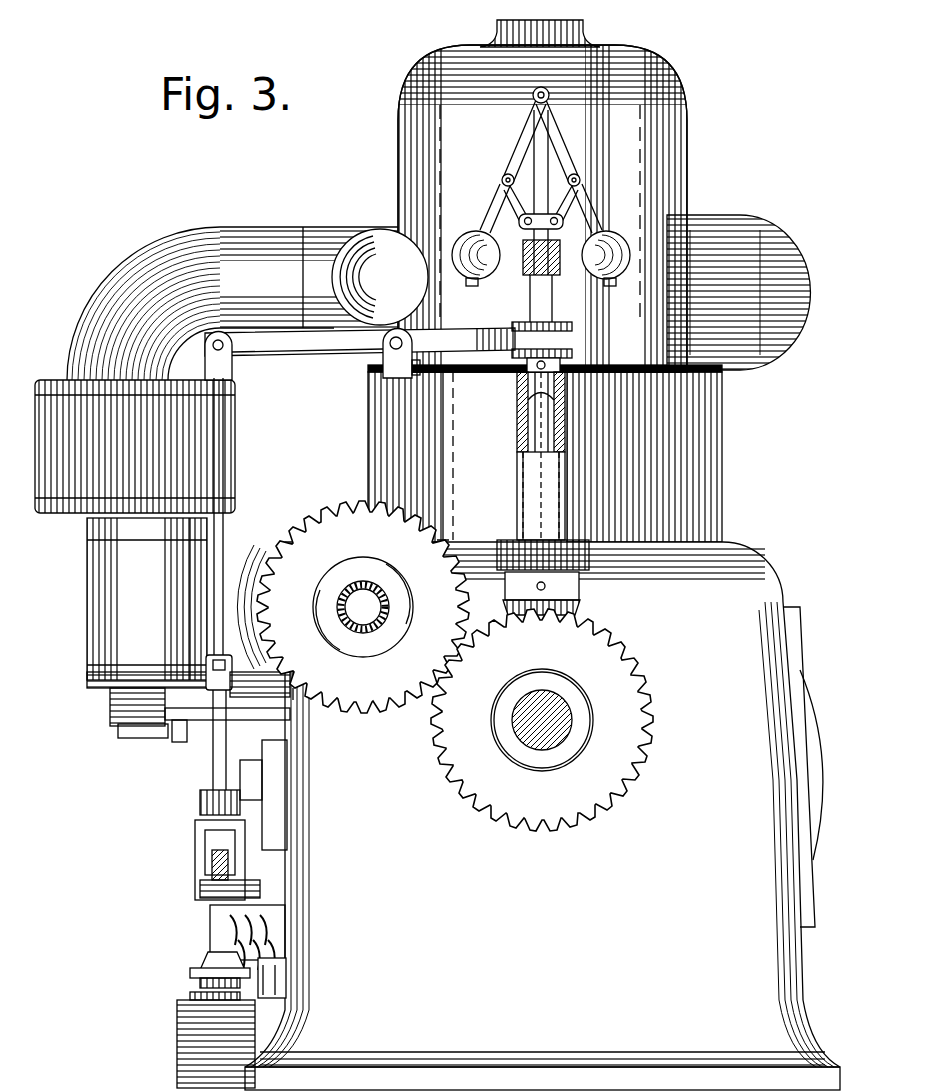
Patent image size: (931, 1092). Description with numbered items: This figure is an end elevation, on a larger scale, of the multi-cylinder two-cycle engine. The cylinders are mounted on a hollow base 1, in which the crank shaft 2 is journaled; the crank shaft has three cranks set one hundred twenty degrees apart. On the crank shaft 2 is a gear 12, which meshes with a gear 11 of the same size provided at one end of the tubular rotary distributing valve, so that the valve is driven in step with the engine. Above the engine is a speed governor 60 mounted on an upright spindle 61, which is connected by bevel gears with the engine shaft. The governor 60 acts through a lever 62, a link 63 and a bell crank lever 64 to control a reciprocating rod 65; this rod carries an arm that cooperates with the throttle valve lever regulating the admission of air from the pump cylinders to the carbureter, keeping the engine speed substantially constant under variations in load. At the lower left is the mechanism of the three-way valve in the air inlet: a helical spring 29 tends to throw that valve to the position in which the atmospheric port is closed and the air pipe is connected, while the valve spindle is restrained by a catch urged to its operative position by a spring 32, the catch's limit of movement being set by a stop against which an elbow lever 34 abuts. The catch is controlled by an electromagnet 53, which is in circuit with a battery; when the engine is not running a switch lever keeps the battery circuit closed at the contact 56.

The hollow base 1 is at (542, 816).
The crank shaft 2 is at (566, 736).
The gear 11 is at (353, 607).
The gear 12 is at (542, 720).
The helical spring 29 is at (230, 938).
The spring 32 is at (272, 987).
The elbow lever 34 is at (196, 978).
The electromagnet 53 is at (177, 1027).
The contact 56 is at (197, 906).
The speed governor 60 is at (493, 201).
The upright spindle 61 is at (535, 414).
The lever 62 is at (360, 354).
The link 63 is at (222, 526).
The bell crank lever 64 is at (213, 766).
The reciprocating rod 65 is at (200, 804).